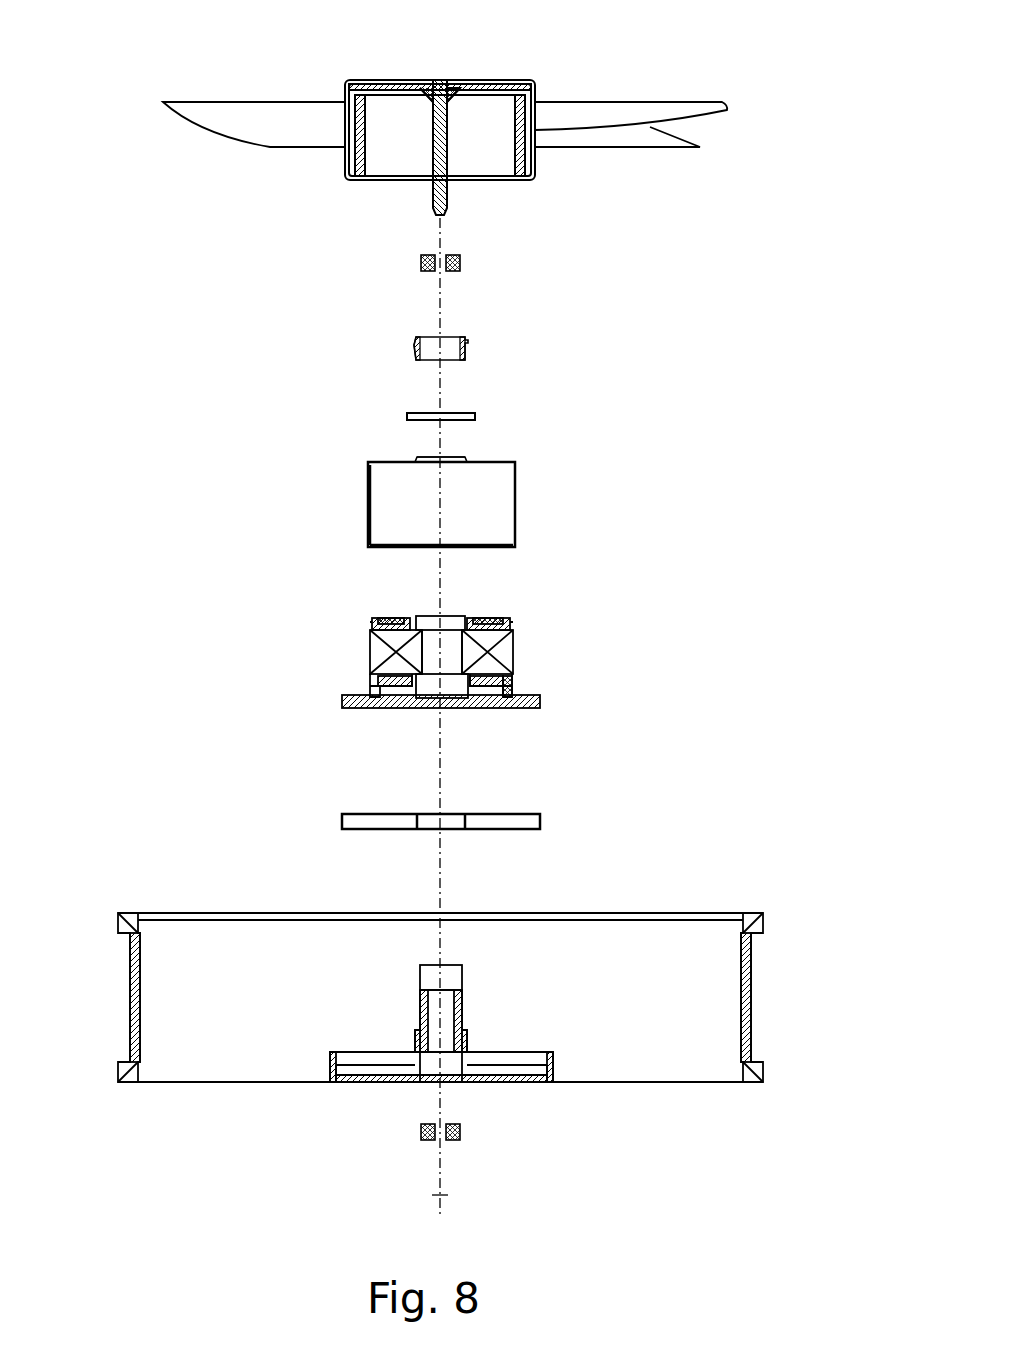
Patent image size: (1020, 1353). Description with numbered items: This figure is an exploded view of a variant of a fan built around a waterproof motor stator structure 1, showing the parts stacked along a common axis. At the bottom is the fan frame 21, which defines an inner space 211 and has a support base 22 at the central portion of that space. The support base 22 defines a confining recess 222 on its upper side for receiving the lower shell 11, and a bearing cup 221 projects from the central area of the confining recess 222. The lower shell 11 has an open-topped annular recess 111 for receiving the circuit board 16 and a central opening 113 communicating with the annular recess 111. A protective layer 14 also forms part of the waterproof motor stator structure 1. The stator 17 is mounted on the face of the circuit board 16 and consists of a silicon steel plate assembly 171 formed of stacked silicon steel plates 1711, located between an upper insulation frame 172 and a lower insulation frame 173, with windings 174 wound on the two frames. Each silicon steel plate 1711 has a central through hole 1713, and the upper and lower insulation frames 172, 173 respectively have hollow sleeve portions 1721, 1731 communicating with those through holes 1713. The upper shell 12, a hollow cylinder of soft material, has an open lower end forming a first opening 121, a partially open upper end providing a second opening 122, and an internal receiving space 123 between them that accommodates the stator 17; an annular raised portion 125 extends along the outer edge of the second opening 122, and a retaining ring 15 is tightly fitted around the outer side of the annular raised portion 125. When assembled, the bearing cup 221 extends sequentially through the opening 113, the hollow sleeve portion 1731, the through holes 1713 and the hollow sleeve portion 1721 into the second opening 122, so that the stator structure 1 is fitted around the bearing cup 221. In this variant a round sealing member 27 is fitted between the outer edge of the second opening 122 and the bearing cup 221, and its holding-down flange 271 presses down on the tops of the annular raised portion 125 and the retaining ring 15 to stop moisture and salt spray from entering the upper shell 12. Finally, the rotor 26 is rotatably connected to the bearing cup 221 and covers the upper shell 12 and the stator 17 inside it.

The waterproof motor stator structure 1 is at (633, 498).
The rotor 26 is at (440, 82).
The round sealing member 27 is at (415, 350).
The holding-down flange 271 is at (418, 336).
The retaining ring 15 is at (410, 413).
The upper shell 12 is at (517, 490).
The second opening 122 is at (415, 460).
The annular raised portion 125 is at (467, 460).
The receiving space 123 is at (400, 497).
The first opening 121 is at (388, 545).
The stator 17 is at (130, 592).
The silicon steel plate assembly 171 is at (368, 633).
The silicon steel plates 1711 is at (392, 650).
The through hole 1713 is at (462, 648).
The upper insulation frame 172 is at (512, 622).
The hollow sleeve portion 1721 is at (458, 614).
The lower insulation frame 173 is at (375, 685).
The hollow sleeve portion 1731 is at (455, 690).
The windings 174 is at (372, 622).
The circuit board 16 is at (512, 690).
The protective layer 14 is at (540, 702).
The lower shell 11 is at (540, 822).
The annular recess 111 is at (360, 825).
The opening 113 is at (455, 822).
The fan frame 21 is at (755, 1072).
The inner space 211 is at (218, 948).
The support base 22 is at (345, 1080).
The bearing cup 221 is at (420, 978).
The confining recess 222 is at (527, 1058).